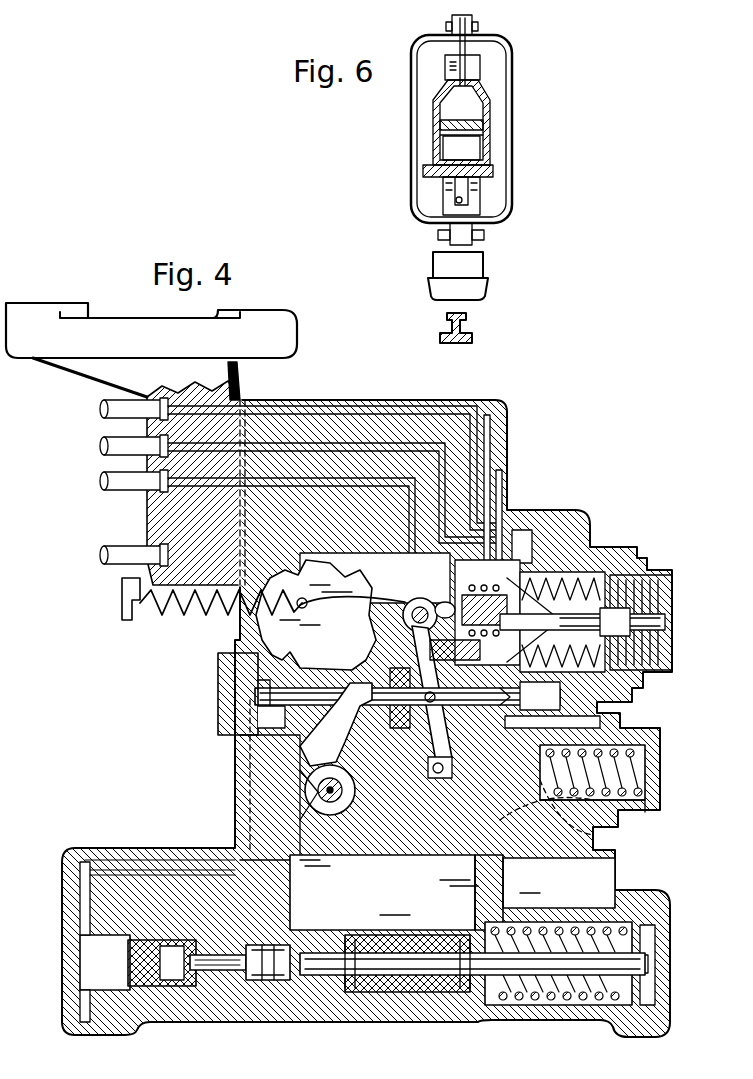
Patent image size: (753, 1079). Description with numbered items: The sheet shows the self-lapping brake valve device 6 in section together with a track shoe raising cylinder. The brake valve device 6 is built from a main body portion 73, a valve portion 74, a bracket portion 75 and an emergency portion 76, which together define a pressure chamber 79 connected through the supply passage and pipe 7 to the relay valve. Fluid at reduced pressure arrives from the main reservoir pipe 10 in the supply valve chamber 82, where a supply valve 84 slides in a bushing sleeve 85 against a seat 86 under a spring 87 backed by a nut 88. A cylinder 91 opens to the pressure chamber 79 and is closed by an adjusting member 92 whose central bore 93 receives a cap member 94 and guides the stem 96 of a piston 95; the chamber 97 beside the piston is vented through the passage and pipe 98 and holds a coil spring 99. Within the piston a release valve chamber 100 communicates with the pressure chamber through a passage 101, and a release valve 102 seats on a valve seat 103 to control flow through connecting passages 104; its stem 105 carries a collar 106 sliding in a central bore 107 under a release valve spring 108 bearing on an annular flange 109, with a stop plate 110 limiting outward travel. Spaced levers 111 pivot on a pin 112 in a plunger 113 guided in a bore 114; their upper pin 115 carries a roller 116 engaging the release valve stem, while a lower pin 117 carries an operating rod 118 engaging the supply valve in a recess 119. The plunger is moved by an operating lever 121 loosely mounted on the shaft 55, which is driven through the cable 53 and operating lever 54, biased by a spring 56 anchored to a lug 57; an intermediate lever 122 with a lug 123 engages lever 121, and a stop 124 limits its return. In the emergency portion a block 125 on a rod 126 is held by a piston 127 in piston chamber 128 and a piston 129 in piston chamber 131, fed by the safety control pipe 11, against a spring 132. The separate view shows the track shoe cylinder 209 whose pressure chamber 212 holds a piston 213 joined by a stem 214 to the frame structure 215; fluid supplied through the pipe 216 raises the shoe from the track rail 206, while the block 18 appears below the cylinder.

In FIG. 4, the brake valve device 6 is at (326, 399).
In FIG. 4, the supply passage and pipe 7 is at (108, 482).
In FIG. 4, the main reservoir pipe 10 is at (108, 407).
In FIG. 4, the safety control pipe 11 is at (118, 551).
In FIG. 6, the block 18 is at (480, 267).
In FIG. 4, the cable 53 is at (168, 848).
In FIG. 4, the operating lever 54 is at (232, 655).
In FIG. 4, the shaft 55 is at (318, 792).
In FIG. 4, the spring 56 is at (163, 616).
In FIG. 4, the lug 57 is at (127, 618).
In FIG. 4, the main body portion 73 is at (512, 405).
In FIG. 4, the valve portion 74 is at (572, 508).
In FIG. 4, the bracket portion 75 is at (301, 337).
In FIG. 4, the emergency portion 76 is at (516, 900).
In FIG. 4, the pressure chamber 79 is at (370, 560).
In FIG. 4, the supply valve chamber 82 is at (612, 843).
In FIG. 4, the supply valve 84 is at (597, 840).
In FIG. 4, the bushing sleeve 85 is at (600, 811).
In FIG. 4, the seat 86 is at (580, 723).
In FIG. 4, the spring 87 is at (622, 770).
In FIG. 4, the nut 88 is at (660, 760).
In FIG. 4, the cylinder 91 is at (466, 560).
In FIG. 4, the adjusting member 92 is at (606, 606).
In FIG. 4, the central bore 93 is at (602, 636).
In FIG. 4, the cap member 94 is at (654, 621).
In FIG. 4, the piston 95 is at (530, 572).
In FIG. 4, the stem 96 is at (647, 588).
In FIG. 4, the chamber 97 is at (617, 545).
In FIG. 4, the passage and pipe 98 is at (108, 446).
In FIG. 4, the coil spring 99 is at (612, 573).
In FIG. 4, the release valve chamber 100 is at (512, 545).
In FIG. 4, the passage 101 is at (444, 745).
In FIG. 4, the release valve 102 is at (592, 538).
In FIG. 4, the valve seat 103 is at (640, 548).
In FIG. 4, the connecting passages 104 is at (628, 571).
In FIG. 4, the stem 105 is at (455, 633).
In FIG. 4, the collar 106 is at (447, 606).
In FIG. 4, the central bore 107 is at (492, 500).
In FIG. 4, the release valve spring 108 is at (500, 520).
In FIG. 4, the annular flange 109 is at (473, 660).
In FIG. 4, the stop plate 110 is at (403, 614).
In FIG. 4, the spaced levers 111 is at (468, 668).
In FIG. 4, the pin 112 is at (427, 699).
In FIG. 4, the plunger 113 is at (258, 690).
In FIG. 4, the bore 114 is at (563, 692).
In FIG. 4, the pin 115 is at (404, 600).
In FIG. 4, the roller 116 is at (410, 609).
In FIG. 4, the pin 117 is at (512, 900).
In FIG. 4, the operating rod 118 is at (537, 851).
In FIG. 4, the recess 119 is at (556, 855).
In FIG. 4, the operating lever 121 is at (300, 741).
In FIG. 4, the intermediate lever 122 is at (300, 766).
In FIG. 4, the lug 123 is at (363, 818).
In FIG. 4, the stop 124 is at (258, 712).
In FIG. 4, the block 125 is at (375, 990).
In FIG. 4, the rod 126 is at (607, 965).
In FIG. 4, the piston 127 is at (268, 997).
In FIG. 4, the piston chamber 128 is at (227, 988).
In FIG. 4, the piston 129 is at (173, 1003).
In FIG. 4, the piston chamber 131 is at (148, 990).
In FIG. 4, the spring 132 is at (625, 945).
In FIG. 6, the track rail 206 is at (463, 315).
In FIG. 6, the magnet track shoe cylinder 209 is at (488, 97).
In FIG. 6, the pressure chamber 212 is at (468, 154).
In FIG. 6, the piston 213 is at (483, 129).
In FIG. 6, the stem 214 is at (471, 68).
In FIG. 6, the frame structure 215 is at (510, 56).
In FIG. 6, the pipe 216 is at (463, 184).